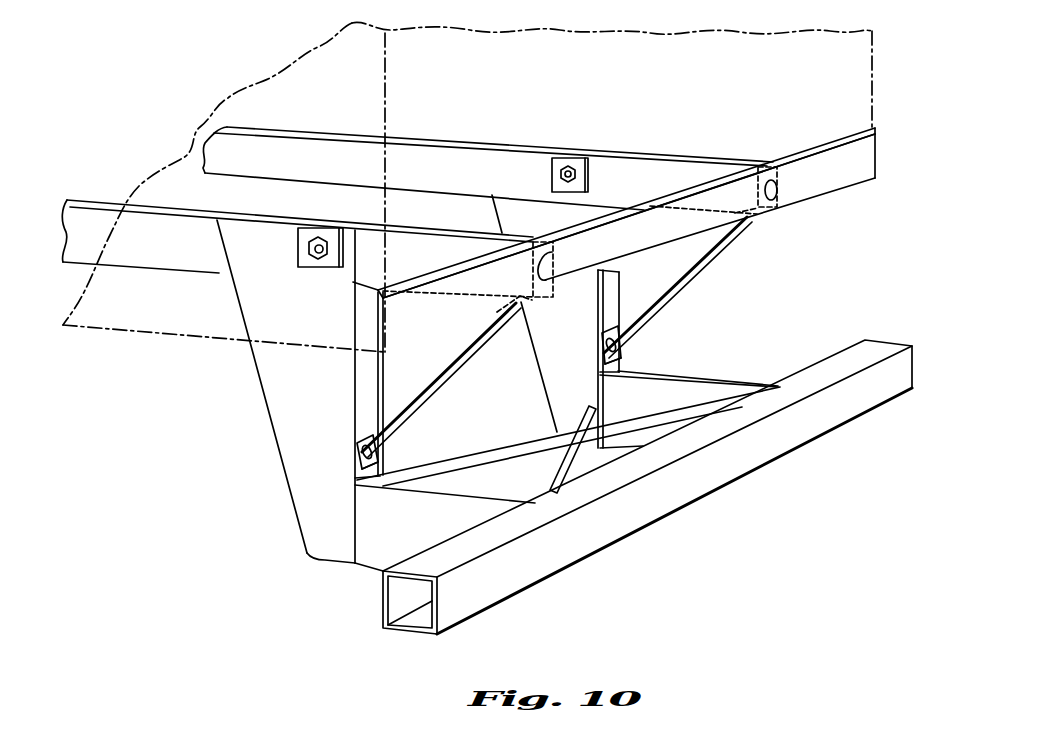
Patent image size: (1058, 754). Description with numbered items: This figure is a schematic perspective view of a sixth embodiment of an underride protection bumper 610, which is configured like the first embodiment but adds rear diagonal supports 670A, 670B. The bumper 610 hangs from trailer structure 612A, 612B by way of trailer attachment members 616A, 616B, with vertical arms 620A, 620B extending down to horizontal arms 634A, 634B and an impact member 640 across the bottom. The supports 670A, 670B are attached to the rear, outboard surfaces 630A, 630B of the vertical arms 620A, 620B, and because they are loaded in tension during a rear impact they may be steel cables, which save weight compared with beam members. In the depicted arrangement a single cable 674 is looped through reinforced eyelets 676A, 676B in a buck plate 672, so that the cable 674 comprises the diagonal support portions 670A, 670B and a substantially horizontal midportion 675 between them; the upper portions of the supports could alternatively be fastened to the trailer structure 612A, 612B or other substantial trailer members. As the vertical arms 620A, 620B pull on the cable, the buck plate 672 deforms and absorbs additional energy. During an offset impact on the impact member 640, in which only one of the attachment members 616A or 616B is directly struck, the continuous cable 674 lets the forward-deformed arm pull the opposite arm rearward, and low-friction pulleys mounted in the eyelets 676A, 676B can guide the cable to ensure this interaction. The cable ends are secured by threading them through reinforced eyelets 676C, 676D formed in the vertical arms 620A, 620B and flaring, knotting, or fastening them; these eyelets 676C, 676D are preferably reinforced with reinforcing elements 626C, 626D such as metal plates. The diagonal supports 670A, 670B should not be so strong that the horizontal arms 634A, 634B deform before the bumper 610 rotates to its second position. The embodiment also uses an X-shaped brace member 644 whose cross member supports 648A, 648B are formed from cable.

The underride protection bumper 610 is at (158, 569).
The trailer structure 612A is at (170, 268).
The trailer structure 612B is at (432, 139).
The trailer attachment member 616A is at (367, 563).
The trailer attachment member 616B is at (617, 367).
The vertical arm 620A is at (320, 314).
The vertical arm 620B is at (592, 324).
The reinforcing element 626C is at (362, 437).
The reinforcing element 626D is at (610, 330).
The rear (outboard) surface 630A is at (370, 393).
The rear (outboard) surface 630B is at (606, 302).
The horizontal arm 634A is at (427, 530).
The horizontal arm 634B is at (657, 411).
The impact member 640 is at (570, 553).
The X-shaped brace member 644 is at (522, 433).
The cross member support 648A is at (566, 470).
The cross member support 648B is at (648, 423).
The rear diagonal support 670A is at (467, 347).
The rear diagonal support 670B is at (727, 235).
The buck plate 672 is at (837, 192).
The single cable 674 is at (872, 68).
The substantially horizontal midportion 675 is at (655, 208).
The reinforced eyelet 676A is at (543, 250).
The reinforced eyelet 676B is at (768, 163).
The reinforced eyelet 676C is at (362, 468).
The reinforced eyelet 676D is at (617, 353).